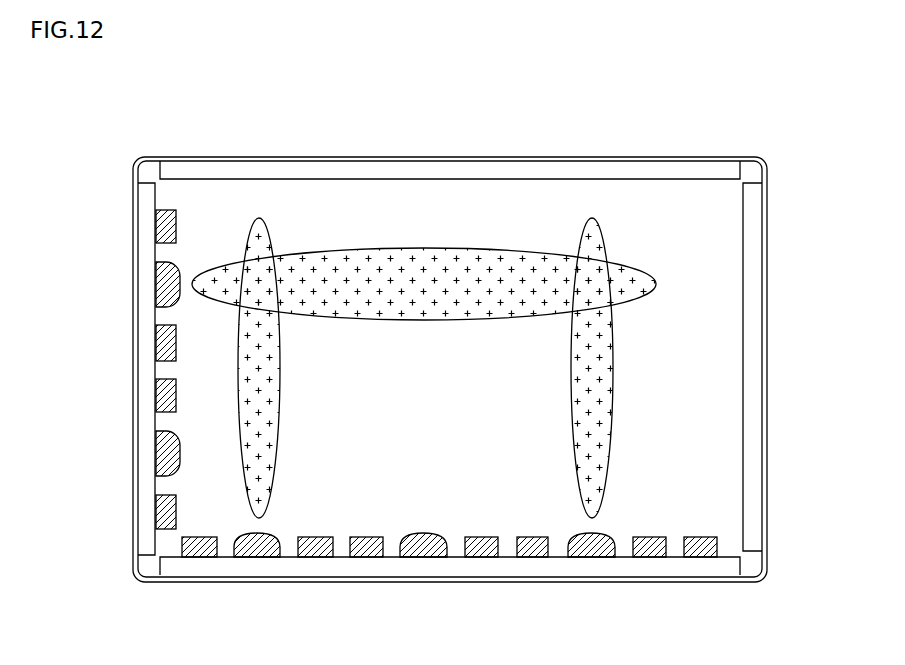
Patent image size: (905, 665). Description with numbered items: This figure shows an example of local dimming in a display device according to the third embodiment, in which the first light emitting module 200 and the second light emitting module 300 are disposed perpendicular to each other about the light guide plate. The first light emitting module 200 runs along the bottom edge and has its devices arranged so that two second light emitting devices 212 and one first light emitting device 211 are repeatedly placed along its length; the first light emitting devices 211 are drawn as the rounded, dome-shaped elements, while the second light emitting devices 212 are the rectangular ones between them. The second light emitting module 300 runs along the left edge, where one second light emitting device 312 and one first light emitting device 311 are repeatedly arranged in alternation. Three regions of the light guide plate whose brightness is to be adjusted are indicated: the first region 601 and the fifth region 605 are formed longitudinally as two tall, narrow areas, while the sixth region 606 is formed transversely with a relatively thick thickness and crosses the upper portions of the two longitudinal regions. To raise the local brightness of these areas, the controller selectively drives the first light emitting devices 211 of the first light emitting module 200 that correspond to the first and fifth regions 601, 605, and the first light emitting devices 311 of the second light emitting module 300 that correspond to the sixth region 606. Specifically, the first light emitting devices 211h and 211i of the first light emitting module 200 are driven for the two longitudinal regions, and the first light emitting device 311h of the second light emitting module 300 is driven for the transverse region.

The second light emitting module 300 is at (760, 168).
The first light emitting module 200 is at (758, 565).
The first light emitting device 311h is at (162, 285).
The first light emitting device 311 is at (146, 451).
The second light emitting device 312 is at (146, 347).
The first light emitting device 211h is at (262, 555).
The first light emitting device 211 is at (422, 568).
The first light emitting device 211i is at (598, 555).
The second light emitting device 212 is at (533, 568).
The first region 601 is at (253, 228).
The fifth region 605 is at (587, 228).
The sixth region 606 is at (445, 265).